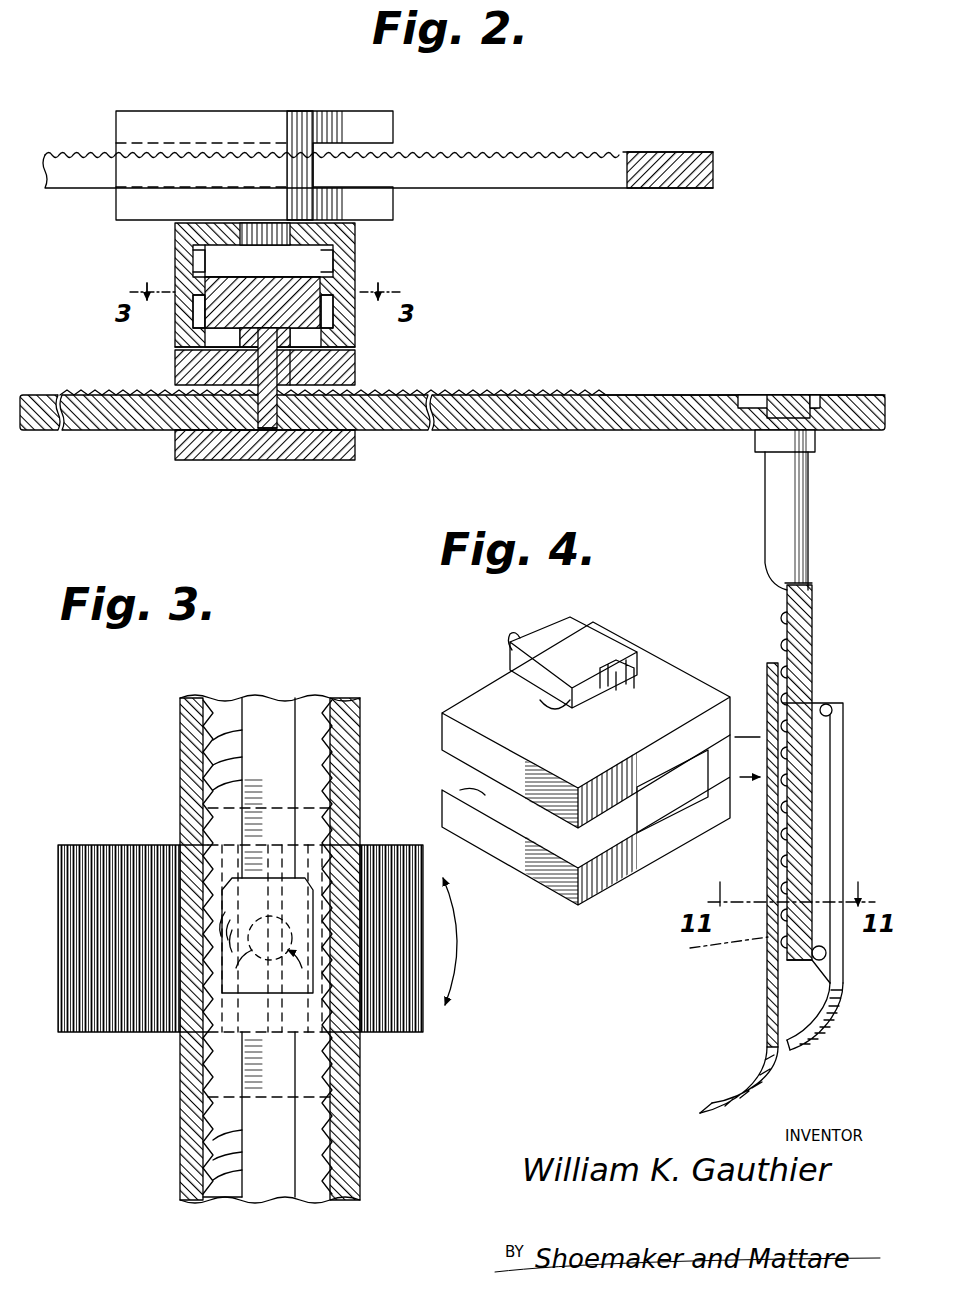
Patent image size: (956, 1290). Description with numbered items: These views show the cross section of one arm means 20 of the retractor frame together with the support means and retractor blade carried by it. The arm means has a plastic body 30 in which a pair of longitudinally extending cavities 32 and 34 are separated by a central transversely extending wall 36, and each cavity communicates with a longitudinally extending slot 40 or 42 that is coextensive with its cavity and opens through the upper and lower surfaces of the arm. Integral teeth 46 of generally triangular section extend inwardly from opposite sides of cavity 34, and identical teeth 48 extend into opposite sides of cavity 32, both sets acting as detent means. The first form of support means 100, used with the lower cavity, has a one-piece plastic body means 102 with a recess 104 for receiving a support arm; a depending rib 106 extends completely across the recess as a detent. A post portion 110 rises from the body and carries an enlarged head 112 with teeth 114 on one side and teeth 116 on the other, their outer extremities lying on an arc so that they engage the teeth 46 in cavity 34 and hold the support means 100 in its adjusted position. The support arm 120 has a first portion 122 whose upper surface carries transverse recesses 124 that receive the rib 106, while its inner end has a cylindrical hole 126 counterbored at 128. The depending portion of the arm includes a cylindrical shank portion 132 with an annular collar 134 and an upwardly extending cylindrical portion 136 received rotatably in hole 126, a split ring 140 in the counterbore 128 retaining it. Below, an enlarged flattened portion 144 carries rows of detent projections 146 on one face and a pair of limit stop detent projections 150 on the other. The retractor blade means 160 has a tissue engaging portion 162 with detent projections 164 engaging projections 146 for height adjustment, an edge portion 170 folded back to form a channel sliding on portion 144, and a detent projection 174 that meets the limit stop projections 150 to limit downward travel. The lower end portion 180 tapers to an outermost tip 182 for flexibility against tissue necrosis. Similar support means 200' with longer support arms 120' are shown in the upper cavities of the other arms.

In FIG. 2, the support means 200' is at (307, 153).
In FIG. 2, the support arm 120' is at (378, 194).
In FIG. 2, the arm means 20 is at (398, 246).
In FIG. 3, the arm means 20 is at (163, 1123).
In FIG. 2, the body 30 is at (178, 258).
In FIG. 3, the body 30 is at (358, 1072).
In FIG. 2, the cavity 32 is at (337, 262).
In FIG. 2, the cavity 34 is at (336, 325).
In FIG. 3, the cavity 34 is at (250, 1198).
In FIG. 2, the central transversely extending wall 36 is at (212, 284).
In FIG. 2, the slot 40 is at (250, 228).
In FIG. 2, the slot 42 is at (258, 340).
In FIG. 2, the teeth 46 is at (193, 318).
In FIG. 3, the teeth 46 is at (215, 742).
In FIG. 2, the teeth 48 is at (193, 252).
In FIG. 2, the support means 100 is at (173, 442).
In FIG. 4, the support means 100 is at (683, 638).
In FIG. 2, the body means 102 is at (232, 462).
In FIG. 4, the body means 102 is at (470, 705).
In FIG. 2, the recess 104 is at (355, 385).
In FIG. 4, the recess 104 is at (640, 858).
In FIG. 2, the depending rib 106 is at (272, 398).
In FIG. 4, the depending rib 106 is at (505, 798).
In FIG. 2, the post portion 110 is at (312, 345).
In FIG. 4, the post portion 110 is at (560, 714).
In FIG. 2, the enlarged head 112 is at (276, 284).
In FIG. 4, the enlarged head 112 is at (595, 664).
In FIG. 3, the enlarged head 112 is at (312, 935).
In FIG. 4, the teeth 114 is at (620, 705).
In FIG. 3, the teeth 114 is at (330, 930).
In FIG. 4, the teeth 116 is at (530, 632).
In FIG. 3, the teeth 116 is at (222, 935).
In FIG. 2, the support arm 120 is at (742, 362).
In FIG. 2, the first portion 122 is at (663, 395).
In FIG. 3, the first portion 122 is at (65, 1033).
In FIG. 2, the transverse recesses 124 is at (530, 392).
In FIG. 3, the transverse recesses 124 is at (130, 1033).
In FIG. 2, the cylindrical hole 126 is at (760, 432).
In FIG. 2, the counterbore 128 is at (742, 395).
In FIG. 2, the shank portion 132 is at (765, 503).
In FIG. 2, the annular collar 134 is at (815, 440).
In FIG. 2, the cylindrical portion 136 is at (805, 395).
In FIG. 2, the split ring 140 is at (828, 393).
In FIG. 2, the flattened portion 144 is at (813, 660).
In FIG. 2, the detent projections 146 is at (783, 645).
In FIG. 2, the limit stop detent projections 150 is at (826, 958).
In FIG. 2, the retractor blade means 160 is at (755, 978).
In FIG. 2, the tissue engaging portion 162 is at (767, 855).
In FIG. 2, the detent projections 164 is at (815, 1033).
In FIG. 2, the edge portion 170 is at (843, 790).
In FIG. 2, the detent projection 174 is at (833, 712).
In FIG. 2, the lower end portion 180 is at (770, 1100).
In FIG. 2, the outermost tip 182 is at (715, 1110).